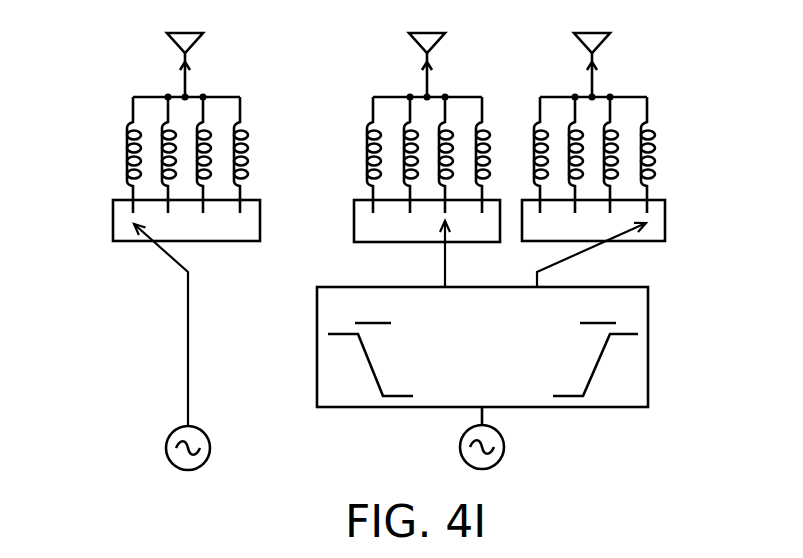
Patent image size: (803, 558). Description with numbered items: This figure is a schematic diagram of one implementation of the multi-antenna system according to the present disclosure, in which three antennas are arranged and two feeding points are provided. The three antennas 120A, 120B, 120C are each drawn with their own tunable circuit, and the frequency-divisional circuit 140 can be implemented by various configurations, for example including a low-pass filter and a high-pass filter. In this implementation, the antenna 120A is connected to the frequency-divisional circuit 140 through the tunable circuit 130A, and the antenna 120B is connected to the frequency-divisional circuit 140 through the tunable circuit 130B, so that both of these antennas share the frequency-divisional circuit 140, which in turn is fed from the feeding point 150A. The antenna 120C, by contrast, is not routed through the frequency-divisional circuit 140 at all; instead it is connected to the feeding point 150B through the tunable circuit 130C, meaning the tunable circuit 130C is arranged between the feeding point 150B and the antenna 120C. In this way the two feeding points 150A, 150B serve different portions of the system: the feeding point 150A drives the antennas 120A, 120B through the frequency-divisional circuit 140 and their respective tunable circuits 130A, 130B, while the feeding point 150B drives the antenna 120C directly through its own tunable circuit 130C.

The antenna 120A is at (606, 49).
The antenna 120B is at (412, 48).
The antenna 120C is at (172, 48).
The tunable circuit 130A is at (653, 160).
The tunable circuit 130B is at (367, 156).
The tunable circuit 130C is at (127, 156).
The frequency-divisional circuit 140 is at (649, 345).
The feeding point 150A is at (505, 447).
The feeding point 150B is at (165, 448).